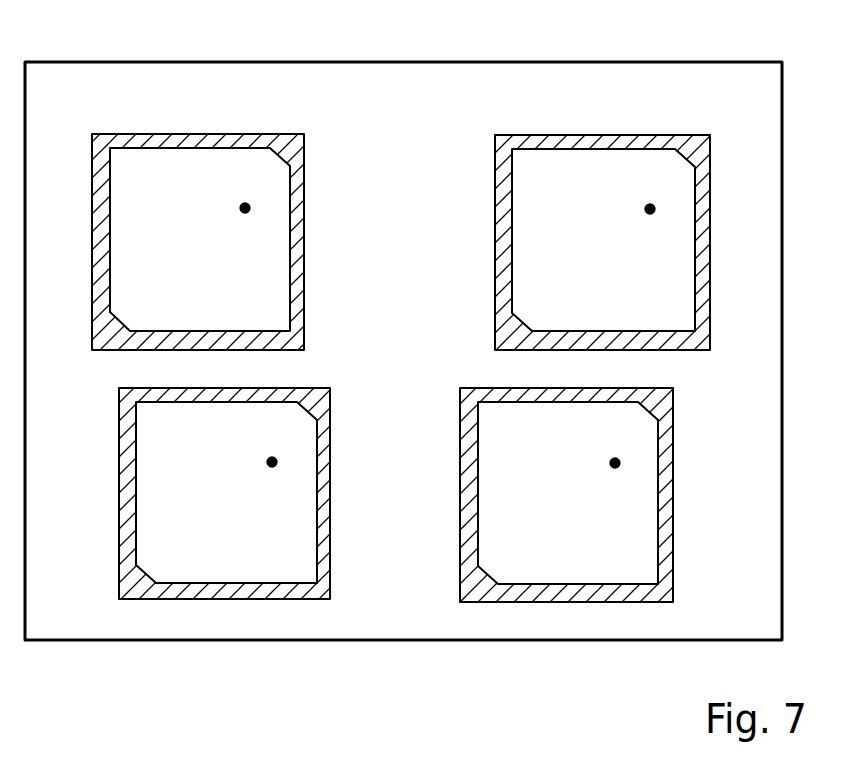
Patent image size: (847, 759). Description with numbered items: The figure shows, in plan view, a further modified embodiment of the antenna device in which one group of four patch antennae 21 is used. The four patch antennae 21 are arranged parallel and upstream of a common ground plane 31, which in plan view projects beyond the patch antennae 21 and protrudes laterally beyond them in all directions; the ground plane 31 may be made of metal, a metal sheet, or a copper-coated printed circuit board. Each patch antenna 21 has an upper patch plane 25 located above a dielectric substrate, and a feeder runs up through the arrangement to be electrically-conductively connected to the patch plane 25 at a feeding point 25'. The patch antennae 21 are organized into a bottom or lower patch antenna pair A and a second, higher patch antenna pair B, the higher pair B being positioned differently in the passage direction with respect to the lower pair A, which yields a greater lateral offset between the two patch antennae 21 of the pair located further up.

The patch antenna 21 is at (207, 163).
The patch plane 25 is at (262, 574).
The feeding point 25' is at (313, 214).
The ground plane 31 is at (92, 613).
The lower patch antenna pair A is at (727, 498).
The higher patch antenna pair B is at (758, 239).